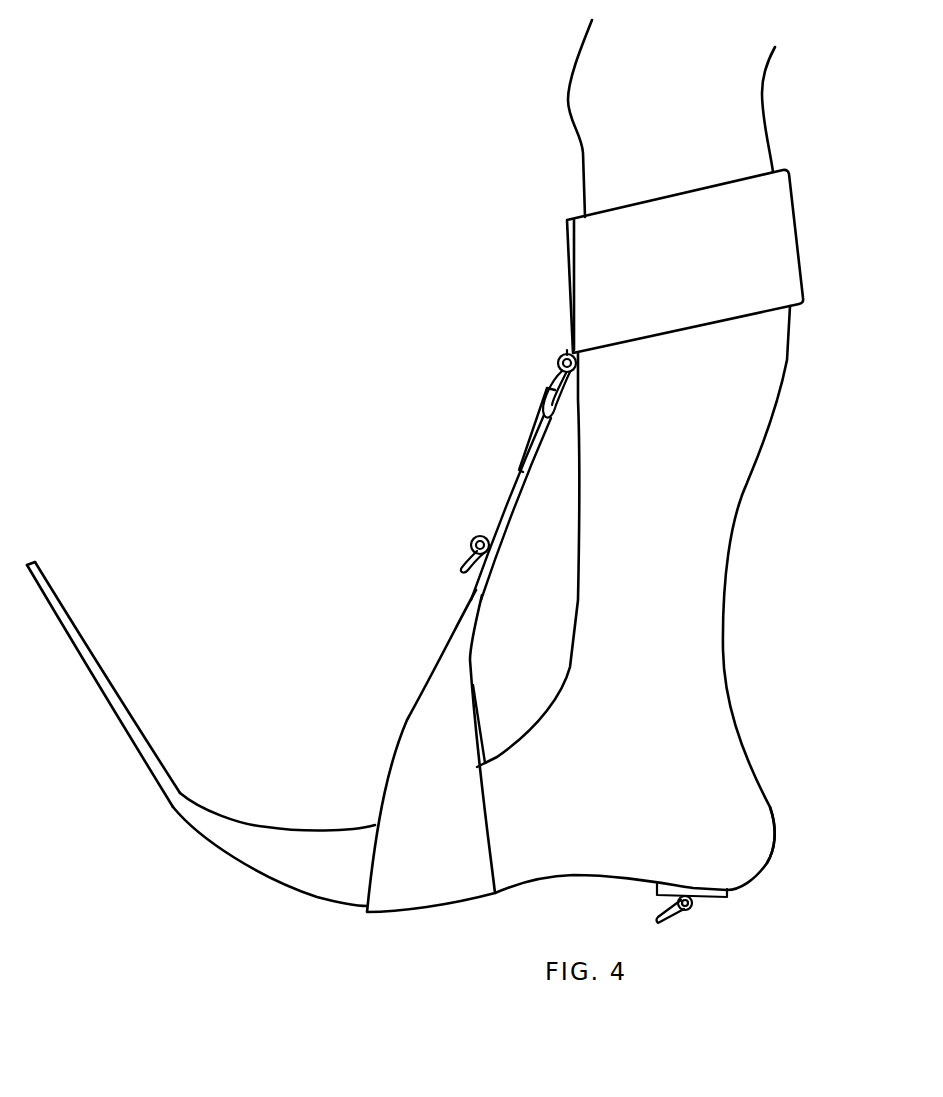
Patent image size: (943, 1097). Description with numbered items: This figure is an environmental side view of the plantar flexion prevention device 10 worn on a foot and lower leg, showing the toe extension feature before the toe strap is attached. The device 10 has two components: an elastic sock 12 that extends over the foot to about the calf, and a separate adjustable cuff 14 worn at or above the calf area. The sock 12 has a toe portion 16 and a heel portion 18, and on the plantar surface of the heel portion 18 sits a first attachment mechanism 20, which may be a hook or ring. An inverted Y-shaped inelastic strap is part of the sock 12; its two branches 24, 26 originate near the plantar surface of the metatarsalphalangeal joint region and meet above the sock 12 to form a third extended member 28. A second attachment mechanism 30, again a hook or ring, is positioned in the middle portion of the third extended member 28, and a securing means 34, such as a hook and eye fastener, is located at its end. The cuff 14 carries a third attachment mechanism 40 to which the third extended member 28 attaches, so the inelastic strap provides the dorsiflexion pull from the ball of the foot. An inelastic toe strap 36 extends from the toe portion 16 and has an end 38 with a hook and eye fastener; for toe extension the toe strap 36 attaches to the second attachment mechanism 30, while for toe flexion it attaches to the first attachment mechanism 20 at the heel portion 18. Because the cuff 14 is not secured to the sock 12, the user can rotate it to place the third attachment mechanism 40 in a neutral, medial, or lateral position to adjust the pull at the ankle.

The plantar flexion prevention device 10 is at (307, 72).
The elastic sock 12 is at (748, 483).
The cuff 14 is at (800, 222).
The toe portion 16 is at (240, 868).
The heel portion 18 is at (765, 863).
The first attachment mechanism 20 is at (665, 920).
The branch 24 is at (393, 757).
The branch 26 is at (480, 723).
The third extended member 28 is at (508, 503).
The second attachment mechanism 30 is at (460, 563).
The securing means 34 is at (532, 448).
The inelastic toe strap 36 is at (115, 722).
The end 38 is at (40, 572).
The third attachment mechanism 40 is at (555, 373).